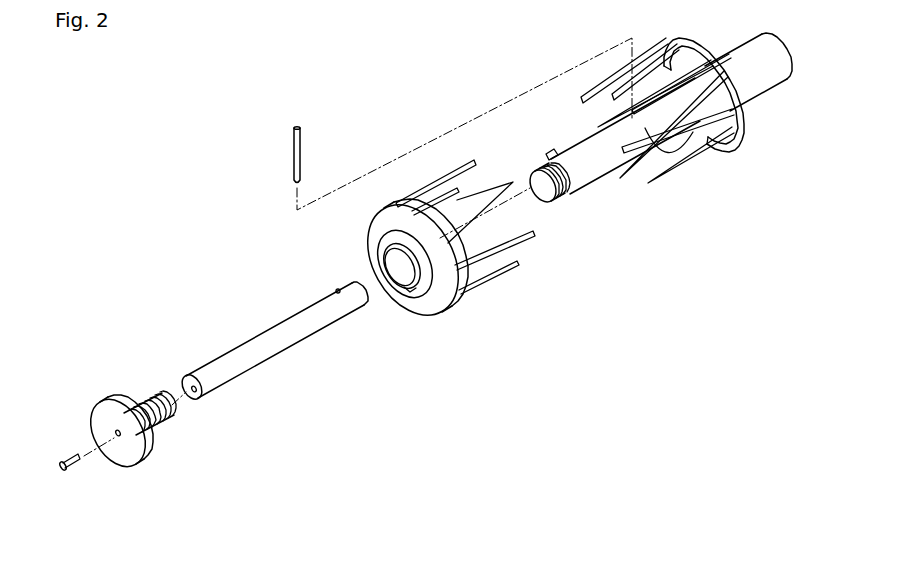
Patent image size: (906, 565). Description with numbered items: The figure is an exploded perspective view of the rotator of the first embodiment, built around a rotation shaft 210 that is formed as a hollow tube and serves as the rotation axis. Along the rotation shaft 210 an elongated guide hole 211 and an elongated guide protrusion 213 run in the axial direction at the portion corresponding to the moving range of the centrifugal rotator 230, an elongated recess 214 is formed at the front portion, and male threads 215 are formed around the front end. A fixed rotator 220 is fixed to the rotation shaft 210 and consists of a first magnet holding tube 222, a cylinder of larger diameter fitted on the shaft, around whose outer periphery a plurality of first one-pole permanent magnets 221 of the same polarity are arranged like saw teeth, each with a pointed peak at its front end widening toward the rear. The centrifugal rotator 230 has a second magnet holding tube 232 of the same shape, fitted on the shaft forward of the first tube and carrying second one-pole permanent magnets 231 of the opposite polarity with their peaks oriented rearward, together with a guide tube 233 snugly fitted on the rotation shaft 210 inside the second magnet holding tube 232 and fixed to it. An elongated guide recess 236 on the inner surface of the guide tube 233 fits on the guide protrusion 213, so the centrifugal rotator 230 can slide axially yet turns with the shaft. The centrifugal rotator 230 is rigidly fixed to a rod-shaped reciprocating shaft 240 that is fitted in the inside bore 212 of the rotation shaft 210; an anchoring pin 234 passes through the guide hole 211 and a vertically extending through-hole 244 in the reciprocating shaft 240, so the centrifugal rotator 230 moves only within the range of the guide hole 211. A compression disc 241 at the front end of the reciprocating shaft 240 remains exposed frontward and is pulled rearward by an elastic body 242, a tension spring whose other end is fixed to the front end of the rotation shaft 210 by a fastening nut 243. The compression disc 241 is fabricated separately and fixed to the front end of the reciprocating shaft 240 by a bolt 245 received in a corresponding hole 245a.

The rotation shaft 210 is at (658, 206).
The guide hole 211 is at (662, 158).
The inside bore 212 is at (566, 260).
The guide protrusion 213 is at (652, 135).
The elongated recess 214 is at (583, 172).
The male threads 215 is at (560, 200).
The fixed rotator 220 is at (685, 175).
The first one-pole permanent magnets 221 is at (690, 155).
The first magnet holding tube 222 is at (724, 140).
The centrifugal rotator 230 is at (447, 323).
The second one-pole permanent magnets 231 is at (493, 257).
The second magnet holding tube 232 is at (460, 252).
The guide tube 233 is at (428, 312).
The anchoring pin 234 is at (292, 152).
The guide recess 236 is at (418, 283).
The reciprocating shaft 240 is at (252, 338).
The compression disc 241 is at (108, 394).
The elastic body 242 is at (133, 398).
The fastening nut 243 is at (153, 395).
The through-hole 244 is at (338, 291).
The bolt 245 is at (82, 462).
The bolt hole 245a is at (198, 392).